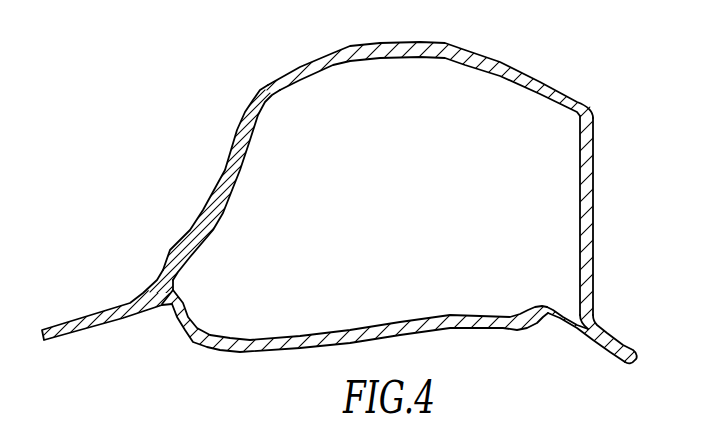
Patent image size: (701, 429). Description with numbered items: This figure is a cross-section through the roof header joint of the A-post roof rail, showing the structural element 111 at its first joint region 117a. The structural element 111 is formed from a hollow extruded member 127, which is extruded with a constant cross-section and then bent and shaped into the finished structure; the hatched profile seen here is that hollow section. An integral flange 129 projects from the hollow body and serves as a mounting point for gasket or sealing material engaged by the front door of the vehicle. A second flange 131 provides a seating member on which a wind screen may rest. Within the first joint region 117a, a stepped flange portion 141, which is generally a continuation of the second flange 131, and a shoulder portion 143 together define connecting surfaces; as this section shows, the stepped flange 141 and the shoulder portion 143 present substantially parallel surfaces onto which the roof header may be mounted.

The structural element 111 is at (258, 350).
The first joint region 117a is at (239, 130).
The hollow extruded member 127 is at (593, 177).
The integral flange 129 is at (82, 330).
The second flange 131 is at (592, 338).
The stepped flange portion 141 is at (618, 333).
The shoulder portion 143 is at (524, 72).